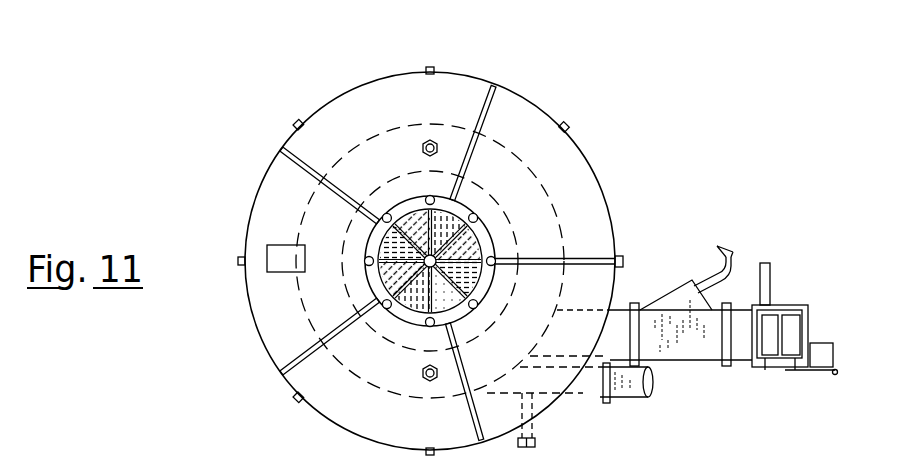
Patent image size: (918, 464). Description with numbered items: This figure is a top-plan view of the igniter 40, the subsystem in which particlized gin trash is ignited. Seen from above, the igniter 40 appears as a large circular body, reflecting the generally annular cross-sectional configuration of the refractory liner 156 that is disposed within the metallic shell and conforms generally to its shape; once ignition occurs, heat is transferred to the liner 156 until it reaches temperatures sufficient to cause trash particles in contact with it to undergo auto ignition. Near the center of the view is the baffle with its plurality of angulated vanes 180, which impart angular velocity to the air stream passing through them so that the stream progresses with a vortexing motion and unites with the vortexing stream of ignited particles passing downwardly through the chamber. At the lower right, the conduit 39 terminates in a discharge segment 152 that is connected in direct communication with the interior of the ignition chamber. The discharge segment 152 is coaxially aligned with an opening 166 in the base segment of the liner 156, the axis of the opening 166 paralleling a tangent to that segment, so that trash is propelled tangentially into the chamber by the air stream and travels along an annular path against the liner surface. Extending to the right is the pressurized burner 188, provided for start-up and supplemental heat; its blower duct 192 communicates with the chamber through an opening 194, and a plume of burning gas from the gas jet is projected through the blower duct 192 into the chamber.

The igniter 40 is at (268, 132).
The liner 156 is at (517, 118).
The angulated vanes 180 is at (372, 251).
The opening 194 is at (552, 327).
The blower duct 192 is at (620, 309).
The pressurized burner 188 is at (694, 373).
The opening 166 is at (508, 384).
The discharge segment 152 is at (585, 392).
The conduit 39 is at (633, 398).